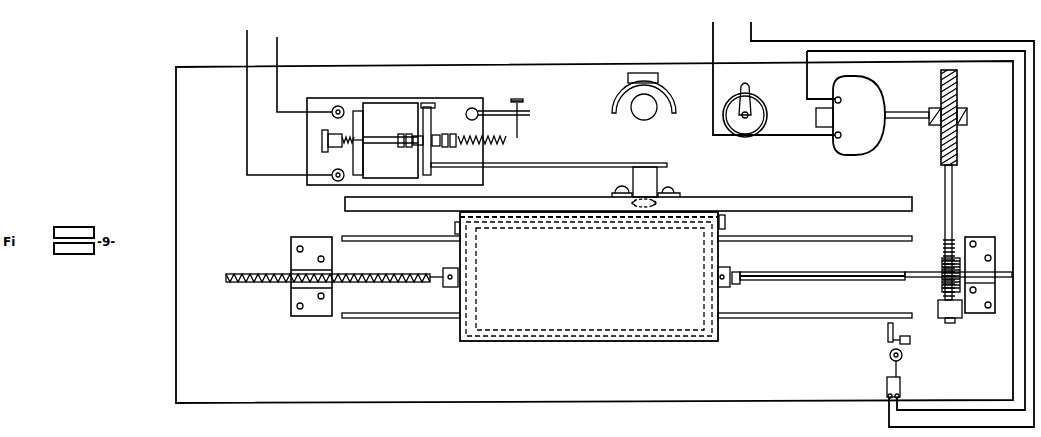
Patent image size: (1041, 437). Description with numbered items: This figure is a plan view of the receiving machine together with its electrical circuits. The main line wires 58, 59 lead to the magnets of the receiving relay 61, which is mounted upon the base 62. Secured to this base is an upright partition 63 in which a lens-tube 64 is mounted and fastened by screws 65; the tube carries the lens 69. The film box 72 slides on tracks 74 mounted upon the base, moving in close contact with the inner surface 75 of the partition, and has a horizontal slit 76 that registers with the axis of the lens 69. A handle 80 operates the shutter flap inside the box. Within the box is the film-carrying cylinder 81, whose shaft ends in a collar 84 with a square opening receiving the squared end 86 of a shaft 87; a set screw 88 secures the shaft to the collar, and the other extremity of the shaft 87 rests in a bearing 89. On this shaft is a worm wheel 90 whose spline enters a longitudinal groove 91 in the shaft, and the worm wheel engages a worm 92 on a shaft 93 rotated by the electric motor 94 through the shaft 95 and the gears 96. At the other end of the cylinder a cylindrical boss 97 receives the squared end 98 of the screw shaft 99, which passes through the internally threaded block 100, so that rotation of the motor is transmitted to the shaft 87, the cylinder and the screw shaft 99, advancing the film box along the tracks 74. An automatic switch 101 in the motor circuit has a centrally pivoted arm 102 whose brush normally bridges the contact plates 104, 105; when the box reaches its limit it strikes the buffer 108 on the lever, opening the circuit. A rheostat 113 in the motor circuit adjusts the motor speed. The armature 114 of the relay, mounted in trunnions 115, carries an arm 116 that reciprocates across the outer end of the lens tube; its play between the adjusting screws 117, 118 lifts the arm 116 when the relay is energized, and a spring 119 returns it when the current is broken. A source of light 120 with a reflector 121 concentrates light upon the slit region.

The main line wire 58 is at (279, 45).
The main line wire 59 is at (247, 56).
The receiving relay 61 is at (390, 140).
The base 62 is at (594, 232).
The upright partition 63 is at (790, 200).
The lens-tube 64 is at (645, 182).
The screws 65 is at (672, 190).
The lens 69 is at (645, 210).
The film box 72 is at (589, 276).
The tracks 74 is at (365, 236).
The inner surface 75 is at (426, 213).
The horizontal slit 76 is at (497, 213).
The handle 80 is at (460, 230).
The film-carrying cylinder 81 is at (497, 329).
The collar 84 is at (726, 267).
The squared end 86 is at (736, 284).
The shaft 87 is at (767, 272).
The set screw 88 is at (718, 277).
The bearing 89 is at (980, 275).
The worm wheel 90 is at (943, 253).
The longitudinal groove 91 is at (862, 272).
The worm 92 is at (941, 286).
The shaft 93 is at (952, 188).
The electric motor 94 is at (850, 115).
The shaft 95 is at (905, 112).
The gears 96 is at (957, 93).
The cylindrical boss 97 is at (450, 268).
The squared end 98 is at (446, 287).
The screw shaft 99 is at (370, 274).
The internally threaded block 100 is at (291, 265).
The automatic switch 101 is at (903, 355).
The centrally pivoted arm 102 is at (889, 349).
The contact plate 104 is at (887, 388).
The contact plate 105 is at (900, 388).
The buffer 108 is at (888, 331).
The rheostat 113 is at (767, 113).
The armature 114 is at (436, 135).
The trunnions 115 is at (427, 103).
The arm 116 is at (572, 163).
The adjusting screw 117 is at (390, 151).
The adjusting screw 118 is at (462, 146).
The spring 119 is at (516, 138).
The source of light 120 is at (644, 120).
The reflector 121 is at (618, 98).